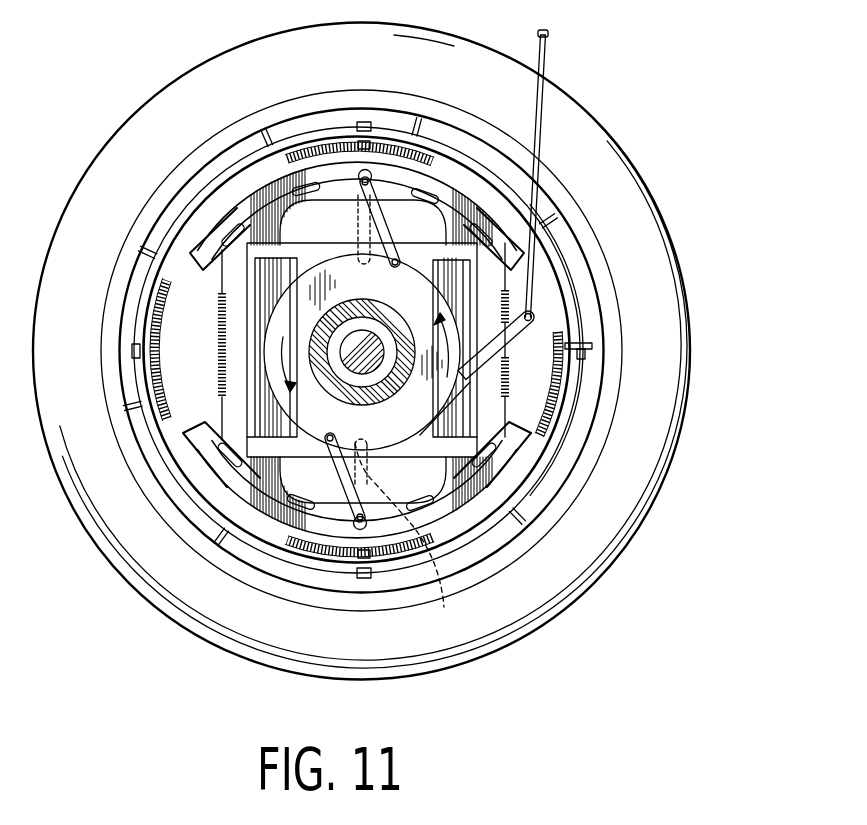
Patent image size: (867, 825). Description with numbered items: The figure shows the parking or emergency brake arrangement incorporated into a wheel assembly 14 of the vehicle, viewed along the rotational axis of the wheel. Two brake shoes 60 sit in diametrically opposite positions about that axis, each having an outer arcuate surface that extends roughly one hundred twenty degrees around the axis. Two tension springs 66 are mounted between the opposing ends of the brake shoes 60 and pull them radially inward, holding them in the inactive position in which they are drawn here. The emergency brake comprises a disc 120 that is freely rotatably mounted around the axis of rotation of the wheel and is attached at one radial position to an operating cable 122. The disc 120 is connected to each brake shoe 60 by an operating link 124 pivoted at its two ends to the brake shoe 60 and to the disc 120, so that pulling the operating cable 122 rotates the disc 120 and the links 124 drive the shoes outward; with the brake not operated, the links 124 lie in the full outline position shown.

The wheel assembly 14 is at (213, 46).
The brake shoe 60 is at (248, 220).
The tension spring 66 is at (220, 333).
The disc 120 is at (440, 387).
The operating cable 122 is at (543, 118).
The operating link 124 is at (383, 222).